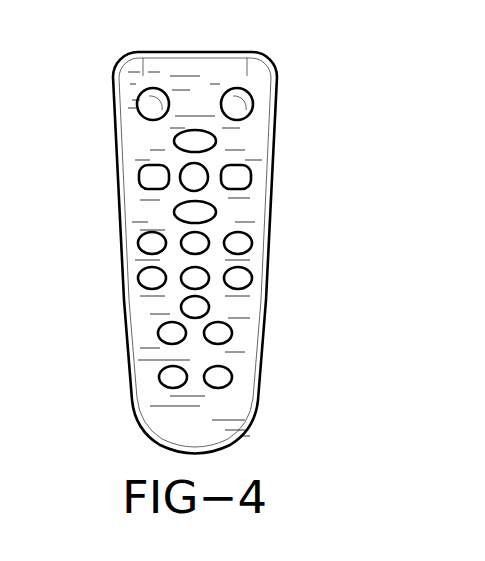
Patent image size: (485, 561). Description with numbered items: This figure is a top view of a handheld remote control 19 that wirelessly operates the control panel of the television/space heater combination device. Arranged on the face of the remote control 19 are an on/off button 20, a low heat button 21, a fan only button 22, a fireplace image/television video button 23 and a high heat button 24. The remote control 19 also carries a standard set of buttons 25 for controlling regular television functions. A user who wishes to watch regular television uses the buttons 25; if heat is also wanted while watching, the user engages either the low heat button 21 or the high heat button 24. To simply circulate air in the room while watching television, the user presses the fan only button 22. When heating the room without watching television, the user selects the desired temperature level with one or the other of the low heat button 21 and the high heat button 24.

The remote control 19 is at (284, 62).
The on/off button 20 is at (150, 105).
The low heat button 21 is at (150, 243).
The fan only button 22 is at (200, 309).
The fireplace image/television video button 23 is at (240, 105).
The high heat button 24 is at (242, 242).
The buttons 25 is at (185, 142).